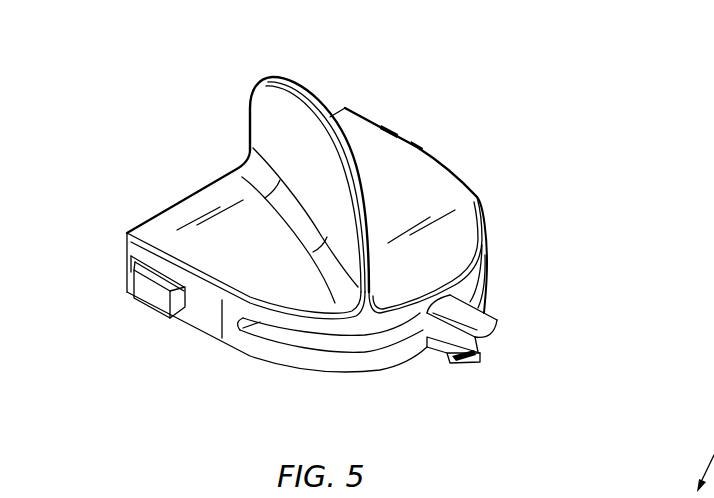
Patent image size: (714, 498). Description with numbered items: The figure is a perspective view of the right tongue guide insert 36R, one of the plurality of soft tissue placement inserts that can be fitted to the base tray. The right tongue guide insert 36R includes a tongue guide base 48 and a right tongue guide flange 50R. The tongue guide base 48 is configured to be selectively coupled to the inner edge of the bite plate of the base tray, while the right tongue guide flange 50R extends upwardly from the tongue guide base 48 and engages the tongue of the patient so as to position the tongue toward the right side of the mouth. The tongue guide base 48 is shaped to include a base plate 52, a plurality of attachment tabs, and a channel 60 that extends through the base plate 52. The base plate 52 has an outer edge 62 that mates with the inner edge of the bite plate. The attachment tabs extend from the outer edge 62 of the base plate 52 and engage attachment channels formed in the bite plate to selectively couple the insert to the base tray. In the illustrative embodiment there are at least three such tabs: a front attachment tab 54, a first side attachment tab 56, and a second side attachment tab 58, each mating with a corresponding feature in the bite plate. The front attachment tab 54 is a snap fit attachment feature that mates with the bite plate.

The right tongue guide insert 36R is at (497, 137).
The tongue guide base 48 is at (452, 138).
The right tongue guide flange 50R is at (325, 76).
The base plate 52 is at (503, 188).
The front attachment tab 54 is at (520, 295).
The first side attachment tab 56 is at (408, 121).
The second side attachment tab 58 is at (136, 317).
The channel 60 is at (277, 353).
The outer edge 62 is at (226, 311).